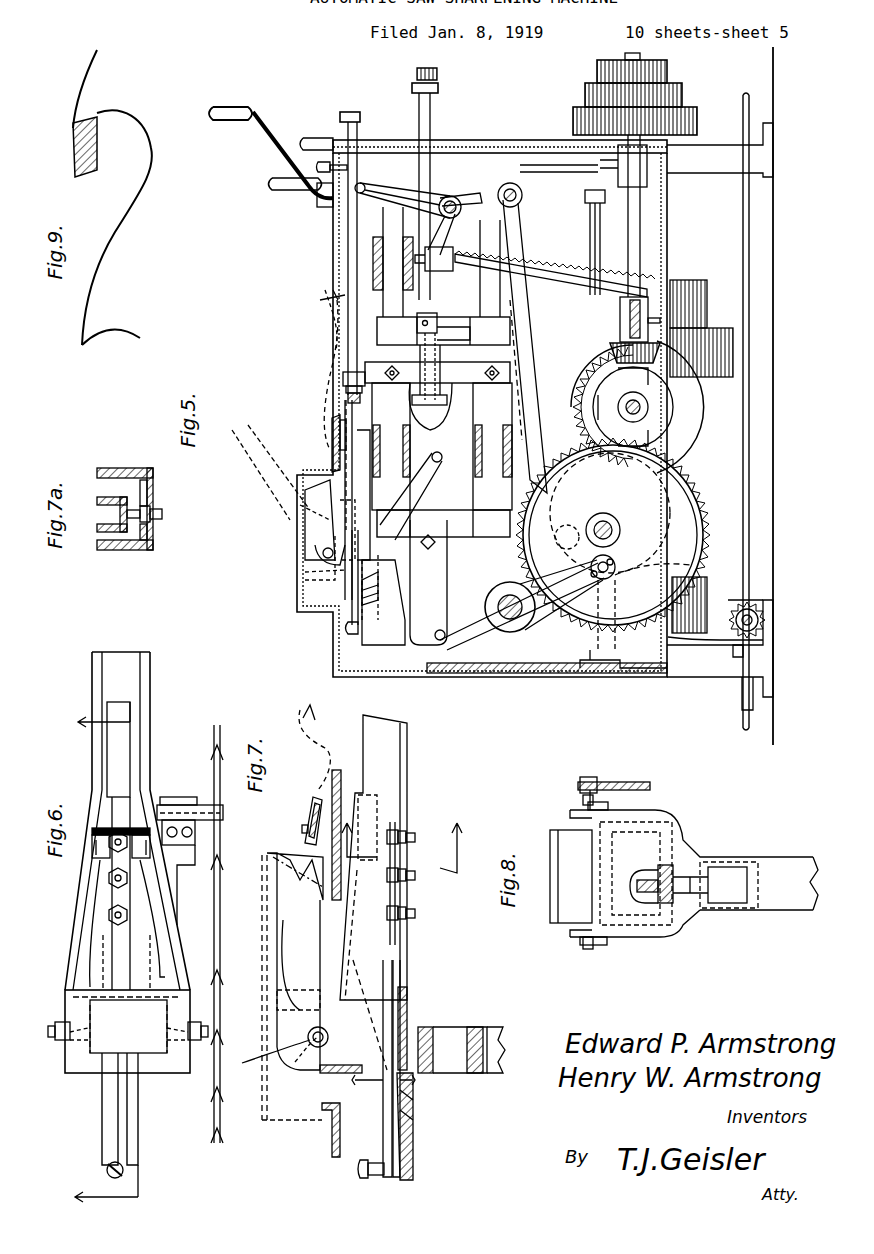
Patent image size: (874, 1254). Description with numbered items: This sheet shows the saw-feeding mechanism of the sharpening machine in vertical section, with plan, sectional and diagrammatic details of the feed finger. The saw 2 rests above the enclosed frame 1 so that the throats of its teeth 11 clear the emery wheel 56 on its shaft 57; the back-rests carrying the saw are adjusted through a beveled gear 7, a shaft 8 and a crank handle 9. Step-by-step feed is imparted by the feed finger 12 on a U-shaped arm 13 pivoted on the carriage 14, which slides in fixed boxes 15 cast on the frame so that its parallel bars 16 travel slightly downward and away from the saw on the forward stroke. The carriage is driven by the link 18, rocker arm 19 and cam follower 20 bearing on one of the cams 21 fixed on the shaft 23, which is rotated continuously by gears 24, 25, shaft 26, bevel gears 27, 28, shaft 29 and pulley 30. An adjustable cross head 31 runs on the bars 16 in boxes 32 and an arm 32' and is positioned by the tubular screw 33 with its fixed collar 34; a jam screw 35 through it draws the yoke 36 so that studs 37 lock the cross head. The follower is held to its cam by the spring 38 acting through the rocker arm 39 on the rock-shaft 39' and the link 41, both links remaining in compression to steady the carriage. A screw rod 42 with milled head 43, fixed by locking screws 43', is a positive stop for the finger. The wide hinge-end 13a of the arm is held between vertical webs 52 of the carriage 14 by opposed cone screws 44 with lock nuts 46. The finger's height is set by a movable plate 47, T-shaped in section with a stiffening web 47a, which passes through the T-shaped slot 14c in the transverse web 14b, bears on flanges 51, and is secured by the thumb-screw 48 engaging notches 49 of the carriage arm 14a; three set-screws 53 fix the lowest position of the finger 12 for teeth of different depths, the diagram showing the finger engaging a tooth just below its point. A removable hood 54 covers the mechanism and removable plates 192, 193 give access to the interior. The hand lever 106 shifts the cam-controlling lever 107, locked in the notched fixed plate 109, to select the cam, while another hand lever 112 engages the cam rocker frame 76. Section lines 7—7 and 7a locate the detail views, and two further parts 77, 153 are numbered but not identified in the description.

In FIG. 7, the machine frame 1 is at (338, 770).
In FIG. 5, the machine frame 1 is at (330, 632).
In FIG. 6, the saw 2 is at (218, 930).
In FIG. 8, the saw 2 is at (625, 782).
In FIG. 5, the saw 2 is at (671, 678).
In FIG. 6, the beveled gear 7 is at (112, 952).
In FIG. 7, the section line 7a is at (401, 857).
In FIG. 7, the shaft 8 is at (378, 1086).
In FIG. 5, the shaft 8 is at (750, 470).
In FIG. 5, the crank handle 9 is at (275, 140).
In FIG. 9, the saw teeth 11 is at (112, 197).
In FIG. 6, the saw teeth 11 is at (221, 905).
In FIG. 7, the saw teeth 11 is at (307, 743).
In FIG. 8, the saw teeth 11 is at (572, 789).
In FIG. 5, the saw teeth 11 is at (330, 360).
In FIG. 9, the saw-feeding finger 12 is at (88, 152).
In FIG. 6, the saw-feeding finger 12 is at (200, 805).
In FIG. 7, the saw-feeding finger 12 is at (312, 815).
In FIG. 8, the saw-feeding finger 12 is at (590, 777).
In FIG. 5, the saw-feeding finger 12 is at (332, 470).
In FIG. 7A, the arm 13 is at (100, 497).
In FIG. 7, the arm 13 is at (293, 917).
In FIG. 8, the arm 13 is at (560, 895).
In FIG. 5, the arm 13 is at (308, 520).
In FIG. 6, the hinge-end 13a is at (140, 1040).
In FIG. 6, the carriage 14 is at (105, 1080).
In FIG. 7, the carriage 14 is at (428, 1027).
In FIG. 8, the carriage 14 is at (788, 880).
In FIG. 5, the carriage 14 is at (400, 635).
In FIG. 7, the carriage arm 14a is at (413, 1170).
In FIG. 8, the carriage arm 14a is at (700, 893).
In FIG. 6, the transverse web 14b is at (140, 1072).
In FIG. 8, the transverse web 14b is at (650, 905).
In FIG. 8, the T-shape slot 14c is at (655, 892).
In FIG. 5, the fixed boxes 15 is at (373, 250).
In FIG. 5, the parallel bars 16 is at (442, 358).
In FIG. 5, the link 18 is at (432, 580).
In FIG. 5, the rocker arm 19 is at (529, 596).
In FIG. 5, the cam follower 20 is at (608, 578).
In FIG. 5, the cams 21 is at (700, 520).
In FIG. 5, the shaft 23 is at (610, 522).
In FIG. 5, the gear 24 is at (505, 558).
In FIG. 5, the gear 25 is at (665, 422).
In FIG. 5, the shaft 26 is at (648, 407).
In FIG. 5, the bevel gear 27 is at (580, 385).
In FIG. 5, the bevel gear 28 is at (612, 350).
In FIG. 5, the shaft 29 is at (630, 260).
In FIG. 5, the pulley 30 is at (590, 93).
In FIG. 5, the adjustable cross head 31 is at (455, 325).
In FIG. 5, the boxes 32 is at (432, 408).
In FIG. 5, the arm 32' is at (394, 595).
In FIG. 5, the screw 33 is at (412, 86).
In FIG. 5, the fixed collar 34 is at (428, 315).
In FIG. 5, the jam screw 35 is at (418, 70).
In FIG. 5, the yoke 36 is at (430, 408).
In FIG. 5, the studs 37 is at (437, 366).
In FIG. 5, the spring 38 is at (560, 275).
In FIG. 5, the rocker arm 39 is at (443, 236).
In FIG. 5, the rock-shaft 39' is at (418, 185).
In FIG. 5, the link 41 is at (332, 300).
In FIG. 5, the screw rod 42 is at (343, 390).
In FIG. 5, the milled head 43 is at (338, 233).
In FIG. 5, the locking screws 43' is at (305, 136).
In FIG. 6, the cone bearings 44 is at (200, 1072).
In FIG. 7, the cone bearings 44 is at (280, 1045).
In FIG. 8, the cone bearings 44 is at (583, 800).
In FIG. 5, the cone bearings 44 is at (315, 555).
In FIG. 6, the lock nuts 46 is at (58, 1023).
In FIG. 7, the lock nuts 46 is at (298, 1065).
In FIG. 8, the lock nuts 46 is at (608, 806).
In FIG. 7A, the movable plate 47 is at (147, 492).
In FIG. 6, the movable plate 47 is at (105, 1085).
In FIG. 7, the movable plate 47 is at (414, 1075).
In FIG. 8, the movable plate 47 is at (668, 865).
In FIG. 5, the movable plate 47 is at (352, 600).
In FIG. 7, the stiffening web 47a is at (385, 1100).
In FIG. 6, the thumb-screw 48 is at (107, 1170).
In FIG. 7, the thumb-screw 48 is at (360, 1172).
In FIG. 5, the thumb-screw 48 is at (354, 634).
In FIG. 7, the notches 49 is at (407, 1105).
In FIG. 5, the notches 49 is at (378, 590).
In FIG. 7A, the supporting flanges 51 is at (148, 535).
In FIG. 6, the supporting flanges 51 is at (100, 840).
In FIG. 7, the supporting flanges 51 is at (400, 860).
In FIG. 5, the supporting flanges 51 is at (340, 445).
In FIG. 7A, the vertical webs 52 is at (125, 468).
In FIG. 6, the vertical webs 52 is at (95, 850).
In FIG. 7, the vertical webs 52 is at (300, 1130).
In FIG. 5, the vertical webs 52 is at (320, 500).
In FIG. 7A, the set-screws 53 is at (162, 516).
In FIG. 6, the set-screws 53 is at (108, 920).
In FIG. 7, the set-screws 53 is at (414, 835).
In FIG. 6, the hood 54 is at (262, 1110).
In FIG. 7, the hood 54 is at (262, 1120).
In FIG. 5, the hood 54 is at (301, 567).
In FIG. 5, the emery wheel 56 is at (266, 468).
In FIG. 5, the shaft 57 is at (295, 500).
In FIG. 5, the cam rocker frame 76 is at (516, 240).
In FIG. 5, the pivot 77 is at (498, 190).
In FIG. 5, the hand lever 106 is at (278, 188).
In FIG. 5, the cam-controlling lever 107 is at (590, 235).
In FIG. 5, the fixed plate 109 is at (618, 172).
In FIG. 5, the hand lever 112 is at (305, 145).
In FIG. 5, the crank pin 153 is at (511, 620).
In FIG. 5, the removable plate 192 is at (500, 675).
In FIG. 5, the removable plate 193 is at (485, 140).